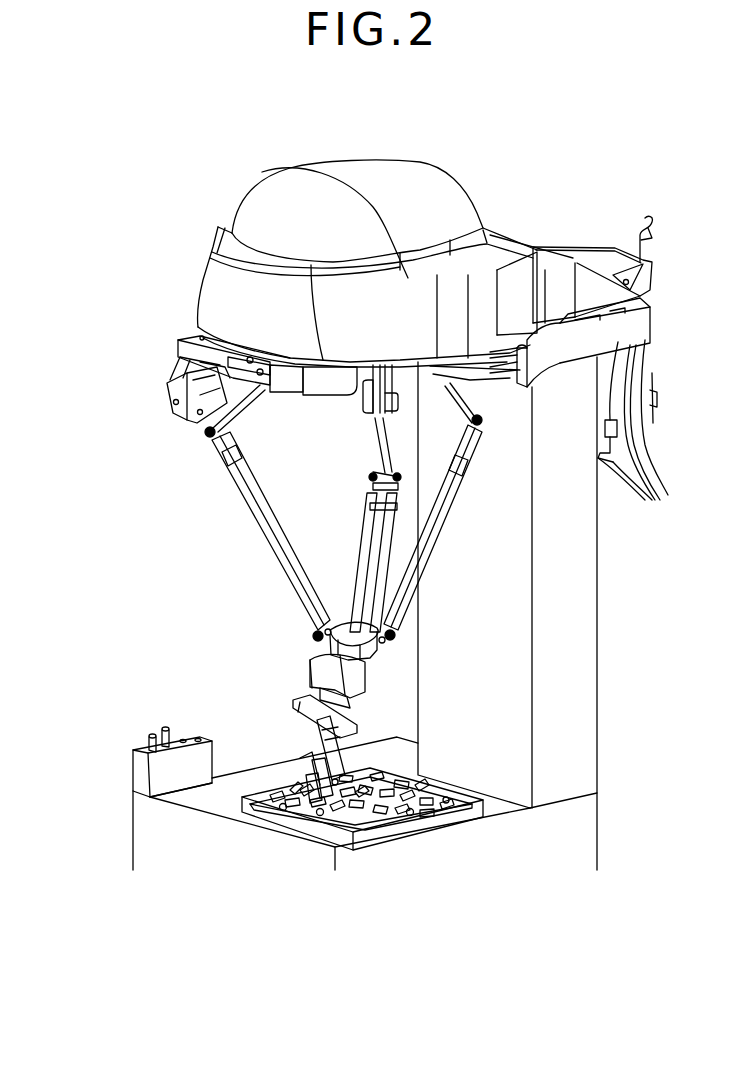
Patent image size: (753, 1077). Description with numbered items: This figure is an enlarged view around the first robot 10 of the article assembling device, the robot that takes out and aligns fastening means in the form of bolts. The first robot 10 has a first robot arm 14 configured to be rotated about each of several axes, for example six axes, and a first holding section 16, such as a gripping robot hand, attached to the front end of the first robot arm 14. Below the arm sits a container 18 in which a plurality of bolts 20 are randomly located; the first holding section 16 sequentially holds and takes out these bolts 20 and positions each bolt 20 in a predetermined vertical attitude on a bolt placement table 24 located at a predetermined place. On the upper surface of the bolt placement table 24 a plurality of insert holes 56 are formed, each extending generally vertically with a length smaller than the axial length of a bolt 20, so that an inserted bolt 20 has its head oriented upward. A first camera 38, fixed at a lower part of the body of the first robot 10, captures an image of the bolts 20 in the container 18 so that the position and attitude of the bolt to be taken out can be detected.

The first robot 10 is at (217, 195).
The first camera 38 is at (178, 380).
The first robot arm 14 is at (250, 513).
The first holding section 16 is at (312, 746).
The bolts 20 is at (165, 728).
The insert holes 56 is at (184, 740).
The bolt placement table 24 is at (133, 777).
The container 18 is at (452, 832).